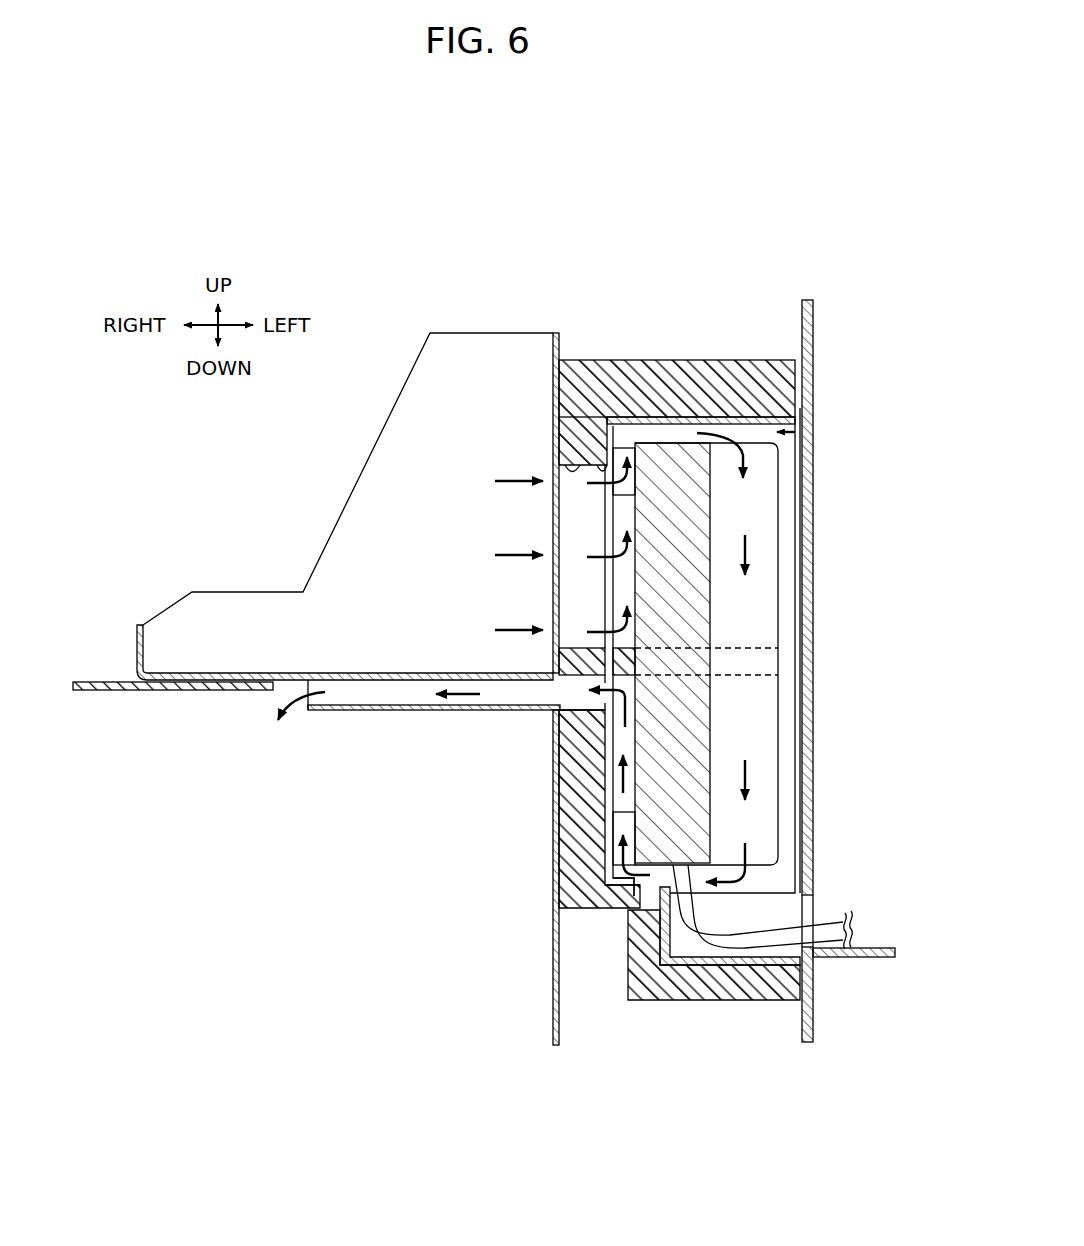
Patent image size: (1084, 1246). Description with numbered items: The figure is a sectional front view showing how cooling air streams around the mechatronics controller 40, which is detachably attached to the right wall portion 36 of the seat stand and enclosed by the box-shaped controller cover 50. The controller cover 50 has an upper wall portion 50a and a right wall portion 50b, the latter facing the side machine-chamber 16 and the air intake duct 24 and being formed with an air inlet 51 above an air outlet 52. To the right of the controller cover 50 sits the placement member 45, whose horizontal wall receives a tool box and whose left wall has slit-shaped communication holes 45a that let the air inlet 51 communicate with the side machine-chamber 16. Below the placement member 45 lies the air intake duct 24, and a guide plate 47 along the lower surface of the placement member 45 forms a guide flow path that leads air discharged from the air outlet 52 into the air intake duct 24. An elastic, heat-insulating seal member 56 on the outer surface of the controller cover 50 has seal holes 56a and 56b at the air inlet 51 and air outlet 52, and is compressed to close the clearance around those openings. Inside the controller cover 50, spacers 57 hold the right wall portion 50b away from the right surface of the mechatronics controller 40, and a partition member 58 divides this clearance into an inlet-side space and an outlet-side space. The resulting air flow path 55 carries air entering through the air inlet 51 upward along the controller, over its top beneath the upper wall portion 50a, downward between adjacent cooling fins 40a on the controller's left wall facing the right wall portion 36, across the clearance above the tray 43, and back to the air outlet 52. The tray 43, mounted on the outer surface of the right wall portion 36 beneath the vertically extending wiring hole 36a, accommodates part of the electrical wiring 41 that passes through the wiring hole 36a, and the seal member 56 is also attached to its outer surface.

The side machine-chamber 16 is at (176, 527).
The air intake duct 24 is at (560, 1020).
The right wall portion 36 is at (810, 322).
The wiring hole 36a is at (813, 902).
The mechatronics controller 40 is at (668, 460).
The cooling fins 40a is at (780, 533).
The electrical wiring 41 is at (773, 943).
The tray 43 is at (718, 985).
The placement member 45 is at (137, 647).
The communication holes 45a is at (553, 578).
The guide plate 47 is at (390, 712).
The controller cover 50 is at (706, 410).
The upper wall portion 50a is at (746, 420).
The right wall portion 50b is at (563, 857).
The air inlet 51 is at (600, 460).
The air outlet 52 is at (560, 758).
The air flow path 55 is at (805, 438).
The seal member 56 is at (560, 803).
The seal hole 56a is at (557, 452).
The seal hole 56b is at (560, 722).
The spacers 57 is at (620, 487).
The partition member 58 is at (802, 662).